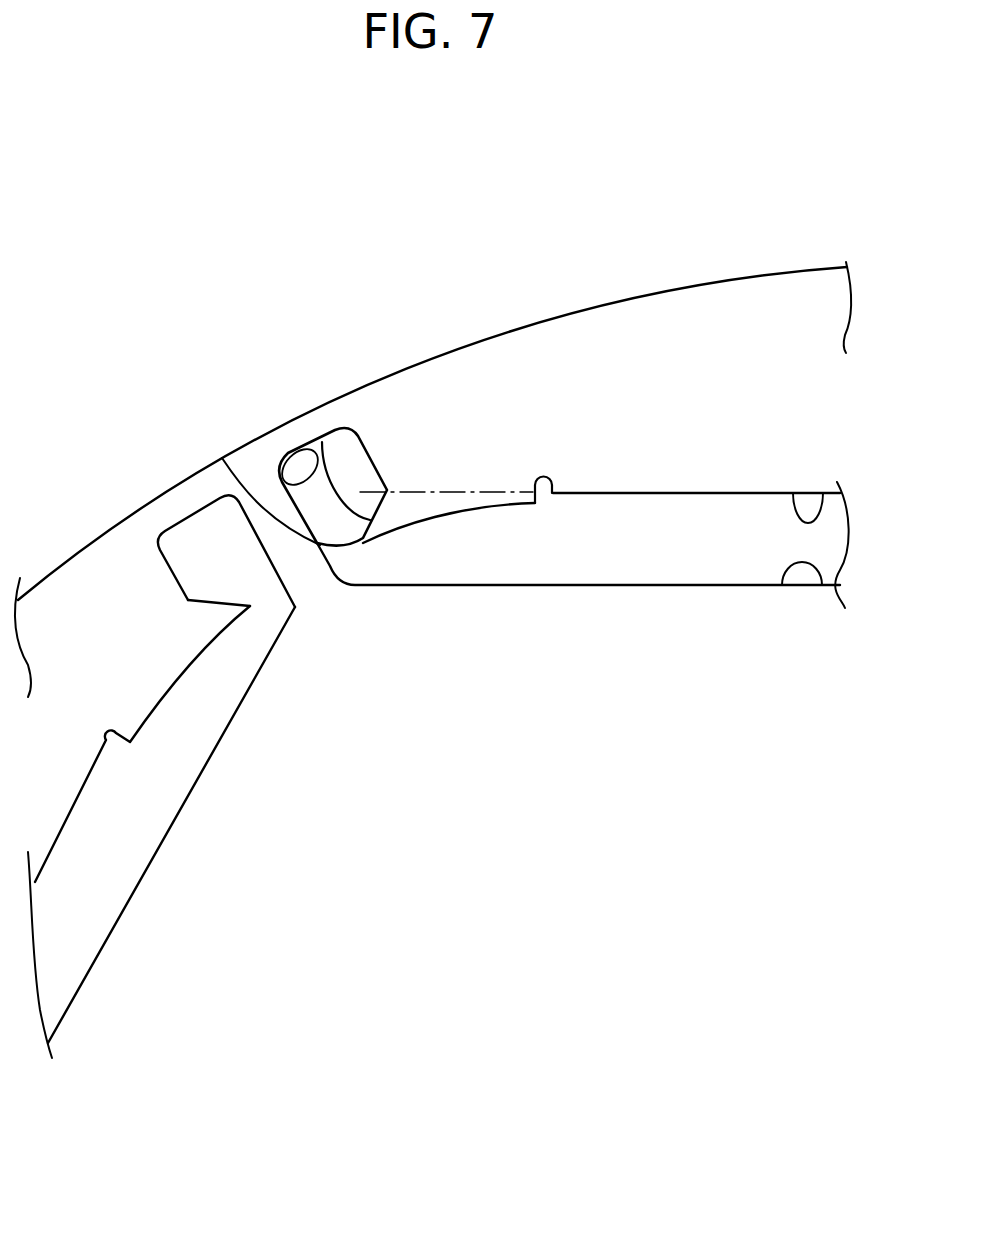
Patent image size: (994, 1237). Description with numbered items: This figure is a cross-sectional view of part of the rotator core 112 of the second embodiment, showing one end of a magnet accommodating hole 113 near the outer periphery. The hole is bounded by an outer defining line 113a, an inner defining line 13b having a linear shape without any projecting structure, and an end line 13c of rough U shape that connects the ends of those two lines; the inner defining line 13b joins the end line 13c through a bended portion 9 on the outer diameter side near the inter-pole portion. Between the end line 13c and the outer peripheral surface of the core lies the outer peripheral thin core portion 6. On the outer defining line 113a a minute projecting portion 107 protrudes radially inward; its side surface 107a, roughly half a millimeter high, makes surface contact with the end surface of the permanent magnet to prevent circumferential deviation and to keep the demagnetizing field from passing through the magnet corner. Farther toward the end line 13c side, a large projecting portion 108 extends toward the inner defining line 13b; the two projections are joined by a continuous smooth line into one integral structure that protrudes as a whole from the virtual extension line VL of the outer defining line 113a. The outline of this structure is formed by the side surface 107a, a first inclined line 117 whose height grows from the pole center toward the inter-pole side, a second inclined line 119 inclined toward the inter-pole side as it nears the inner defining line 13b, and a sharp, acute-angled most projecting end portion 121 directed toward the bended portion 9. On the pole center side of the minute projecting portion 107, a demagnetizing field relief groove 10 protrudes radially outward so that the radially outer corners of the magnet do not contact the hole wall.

The outer peripheral thin core portion 6 is at (173, 502).
The bended portion 9 is at (295, 607).
The demagnetizing field relief groove 10 is at (543, 488).
The inner defining line 13b is at (822, 585).
The end line 13c is at (278, 463).
The minute projecting portion 107 is at (520, 507).
The side surface 107a is at (560, 493).
The large projecting portion 108 is at (370, 520).
The rotator core 112 is at (95, 140).
The magnet accommodating hole 113 is at (753, 503).
The outer defining line 113a is at (822, 493).
The first inclined line 117 is at (453, 510).
The second inclined line 119 is at (322, 442).
The most projecting end portion 121 is at (222, 458).
The virtual extension line VL is at (430, 490).